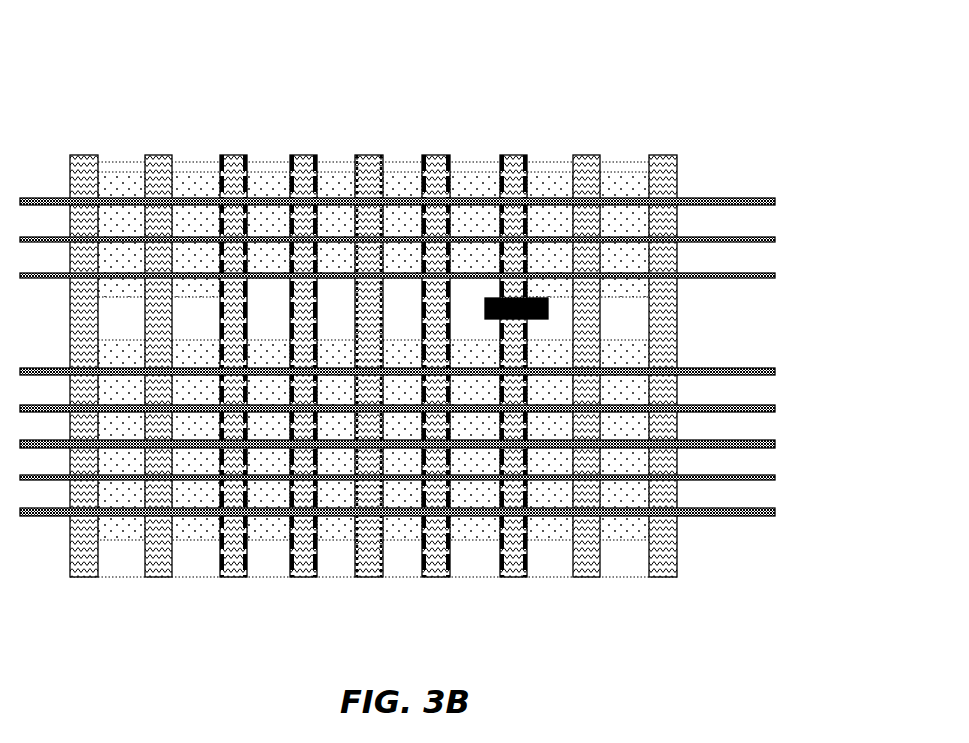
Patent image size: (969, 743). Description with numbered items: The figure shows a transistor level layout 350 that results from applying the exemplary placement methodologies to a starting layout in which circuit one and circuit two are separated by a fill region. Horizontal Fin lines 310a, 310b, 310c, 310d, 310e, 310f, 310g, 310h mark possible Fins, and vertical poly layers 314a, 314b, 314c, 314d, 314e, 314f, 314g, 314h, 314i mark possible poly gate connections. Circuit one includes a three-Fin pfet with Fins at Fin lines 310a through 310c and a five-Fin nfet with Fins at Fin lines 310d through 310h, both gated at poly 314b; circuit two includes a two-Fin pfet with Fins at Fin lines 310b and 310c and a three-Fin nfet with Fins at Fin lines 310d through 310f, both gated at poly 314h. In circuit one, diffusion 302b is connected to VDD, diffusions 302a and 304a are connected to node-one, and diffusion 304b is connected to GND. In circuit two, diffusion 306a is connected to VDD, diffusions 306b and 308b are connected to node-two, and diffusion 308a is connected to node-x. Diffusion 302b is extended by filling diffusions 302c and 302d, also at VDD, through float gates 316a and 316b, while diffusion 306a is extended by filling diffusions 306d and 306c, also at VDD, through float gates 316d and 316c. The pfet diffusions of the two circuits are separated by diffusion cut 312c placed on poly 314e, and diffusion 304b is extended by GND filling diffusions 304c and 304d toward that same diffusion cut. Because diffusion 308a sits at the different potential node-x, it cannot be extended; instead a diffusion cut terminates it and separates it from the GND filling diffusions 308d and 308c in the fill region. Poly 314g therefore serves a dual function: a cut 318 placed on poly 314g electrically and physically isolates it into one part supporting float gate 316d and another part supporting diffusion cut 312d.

The layout 350 is at (97, 93).
The diffusion 302a is at (130, 185).
The diffusion 302b is at (205, 185).
The filling diffusion 302c is at (256, 280).
The filling diffusion 302d is at (332, 280).
The diffusion 304a is at (117, 522).
The diffusion 304b is at (196, 522).
The filling diffusion 304c is at (270, 522).
The filling diffusion 304d is at (340, 522).
The diffusion 306a is at (552, 198).
The diffusion 306b is at (622, 198).
The filling diffusion 306c is at (397, 280).
The filling diffusion 306d is at (462, 280).
The diffusion 308a is at (547, 522).
The diffusion 308b is at (628, 438).
The filling diffusion 308c is at (410, 522).
The filling diffusion 308d is at (472, 522).
The Fin line 310a is at (755, 198).
The Fin line 310b is at (755, 233).
The Fin line 310c is at (755, 268).
The Fin line 310d is at (755, 364).
The Fin line 310e is at (755, 400).
The Fin line 310f is at (755, 437).
The Fin line 310g is at (755, 471).
The Fin line 310h is at (755, 505).
The diffusion cut 312c is at (392, 127).
The diffusion cut 312d is at (430, 125).
The poly layer 314a is at (92, 263).
The poly layer 314b is at (170, 258).
The poly layer 314c is at (242, 263).
The poly layer 314d is at (318, 250).
The poly layer 314e is at (383, 265).
The poly layer 314f is at (450, 253).
The poly layer 314g is at (524, 253).
The poly layer 314h is at (598, 258).
The poly layer 314i is at (676, 257).
The float gate 316a is at (327, 132).
The float gate 316b is at (312, 122).
The float gate 316c is at (327, 132).
The float gate 316d is at (496, 163).
The cut 318 is at (523, 332).